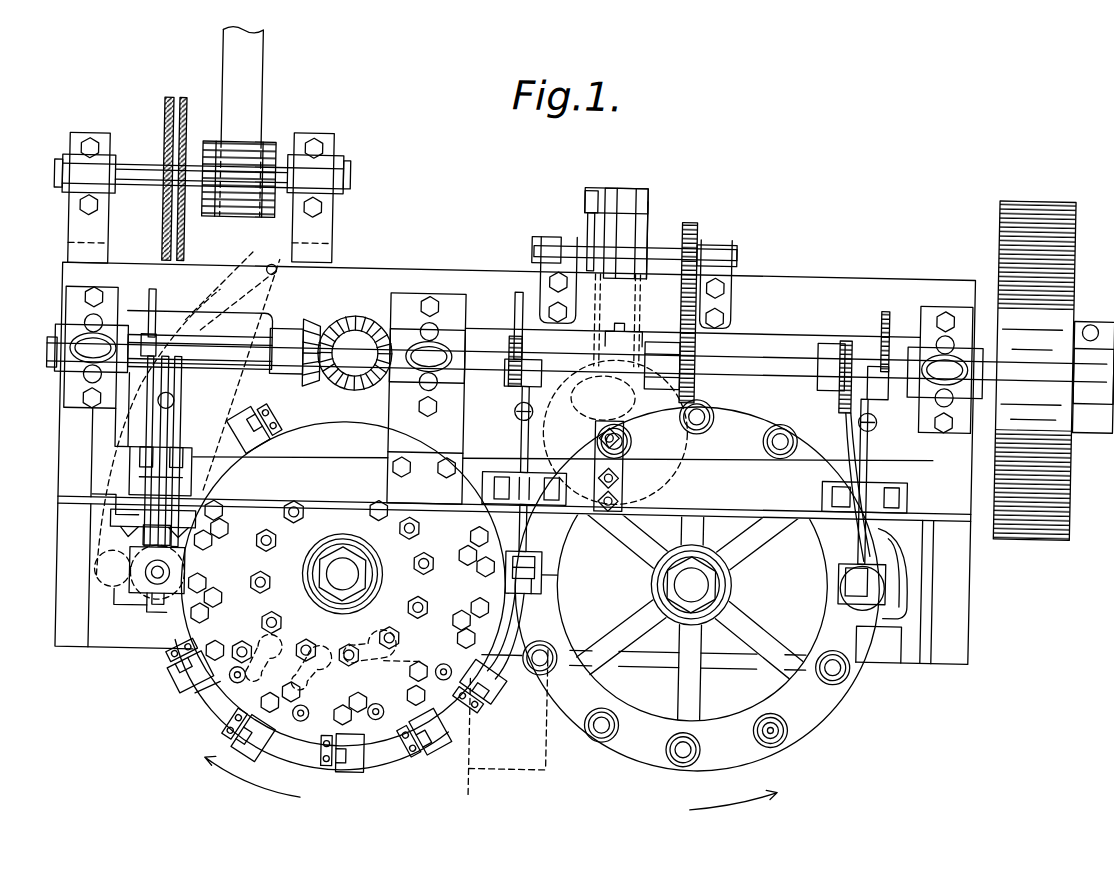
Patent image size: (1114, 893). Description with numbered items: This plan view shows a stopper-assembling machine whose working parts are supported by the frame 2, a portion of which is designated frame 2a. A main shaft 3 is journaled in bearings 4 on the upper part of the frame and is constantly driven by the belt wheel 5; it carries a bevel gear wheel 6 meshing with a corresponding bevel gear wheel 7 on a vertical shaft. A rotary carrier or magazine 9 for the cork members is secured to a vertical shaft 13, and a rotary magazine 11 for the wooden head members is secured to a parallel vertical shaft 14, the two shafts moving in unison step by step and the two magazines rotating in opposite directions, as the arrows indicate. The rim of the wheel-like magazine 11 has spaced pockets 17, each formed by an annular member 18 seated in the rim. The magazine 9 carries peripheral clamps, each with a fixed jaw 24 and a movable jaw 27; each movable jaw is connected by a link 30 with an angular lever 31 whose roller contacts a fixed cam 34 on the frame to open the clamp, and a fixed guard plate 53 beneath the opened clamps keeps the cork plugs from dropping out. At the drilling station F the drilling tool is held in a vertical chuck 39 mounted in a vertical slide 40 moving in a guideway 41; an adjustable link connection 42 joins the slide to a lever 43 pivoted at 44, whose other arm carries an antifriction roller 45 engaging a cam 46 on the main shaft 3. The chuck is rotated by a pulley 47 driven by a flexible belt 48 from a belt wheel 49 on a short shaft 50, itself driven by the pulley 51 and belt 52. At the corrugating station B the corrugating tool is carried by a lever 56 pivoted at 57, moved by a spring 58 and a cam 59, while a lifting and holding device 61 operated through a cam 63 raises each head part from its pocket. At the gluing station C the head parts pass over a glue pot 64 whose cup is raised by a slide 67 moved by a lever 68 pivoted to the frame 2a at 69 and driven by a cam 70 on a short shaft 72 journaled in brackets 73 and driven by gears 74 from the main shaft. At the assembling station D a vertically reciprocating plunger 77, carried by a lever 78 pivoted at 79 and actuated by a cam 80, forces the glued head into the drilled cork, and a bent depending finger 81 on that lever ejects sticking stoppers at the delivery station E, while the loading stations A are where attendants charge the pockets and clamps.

The frame 2 is at (513, 535).
The frame 2a is at (646, 222).
The main shaft 3 is at (50, 356).
The bearings 4 is at (60, 376).
The belt wheel 5 is at (1034, 370).
The bevel gear wheel 6 is at (309, 327).
The bevel gear wheel 7 is at (354, 322).
The rotary carrier or magazine 9 is at (343, 584).
The rotary magazine or carrier 11 is at (697, 588).
The vertical shaft 13 is at (346, 572).
The vertical shaft 14 is at (680, 580).
The pockets or apertures 17 is at (828, 676).
The annular member 18 is at (782, 730).
The fixed jaw 24 is at (445, 745).
The movable jaw member 27 is at (425, 752).
The link 30 is at (238, 724).
The angular lever 31 is at (218, 706).
The fixed cam 34 is at (333, 659).
The vertical chuck 39 is at (152, 604).
The vertical slide 40 is at (148, 566).
The guideway 41 is at (120, 524).
The adjustable link connection 42 is at (148, 548).
The lever 43 is at (181, 494).
The pivot 44 is at (183, 462).
The antifriction wheel or roller 45 is at (156, 346).
The cam 46 is at (149, 300).
The pulley 47 is at (178, 582).
The flexible belt 48 is at (178, 248).
The belt wheel 49 is at (158, 115).
The short shaft 50 is at (140, 178).
The pulley 51 is at (265, 152).
The belt 52 is at (242, 121).
The fixed guard plate 53 is at (287, 757).
The lever 56 is at (856, 515).
The pivot 57 is at (868, 472).
The spring 58 is at (876, 418).
The cam 59 is at (882, 306).
The lifting and holding device 61 is at (910, 580).
The cam 63 is at (836, 378).
The glue pot 64 is at (616, 389).
The slide 67 is at (616, 320).
The lever 68 is at (625, 233).
The pivot 69 is at (618, 190).
The cam 70 is at (583, 232).
The short shaft 72 is at (635, 247).
The brackets 73 is at (537, 272).
The gears 74 is at (693, 242).
The plunger 77 is at (530, 595).
The lever 78 is at (521, 436).
The pivot 79 is at (524, 478).
The cam 80 is at (512, 306).
The bent depending finger 81 is at (514, 616).
The charging or loading stations A is at (491, 783).
The corrugating station B is at (878, 598).
The gluing station C is at (655, 385).
The assembling station D is at (545, 578).
The delivery station E is at (479, 689).
The drilling station F is at (159, 605).